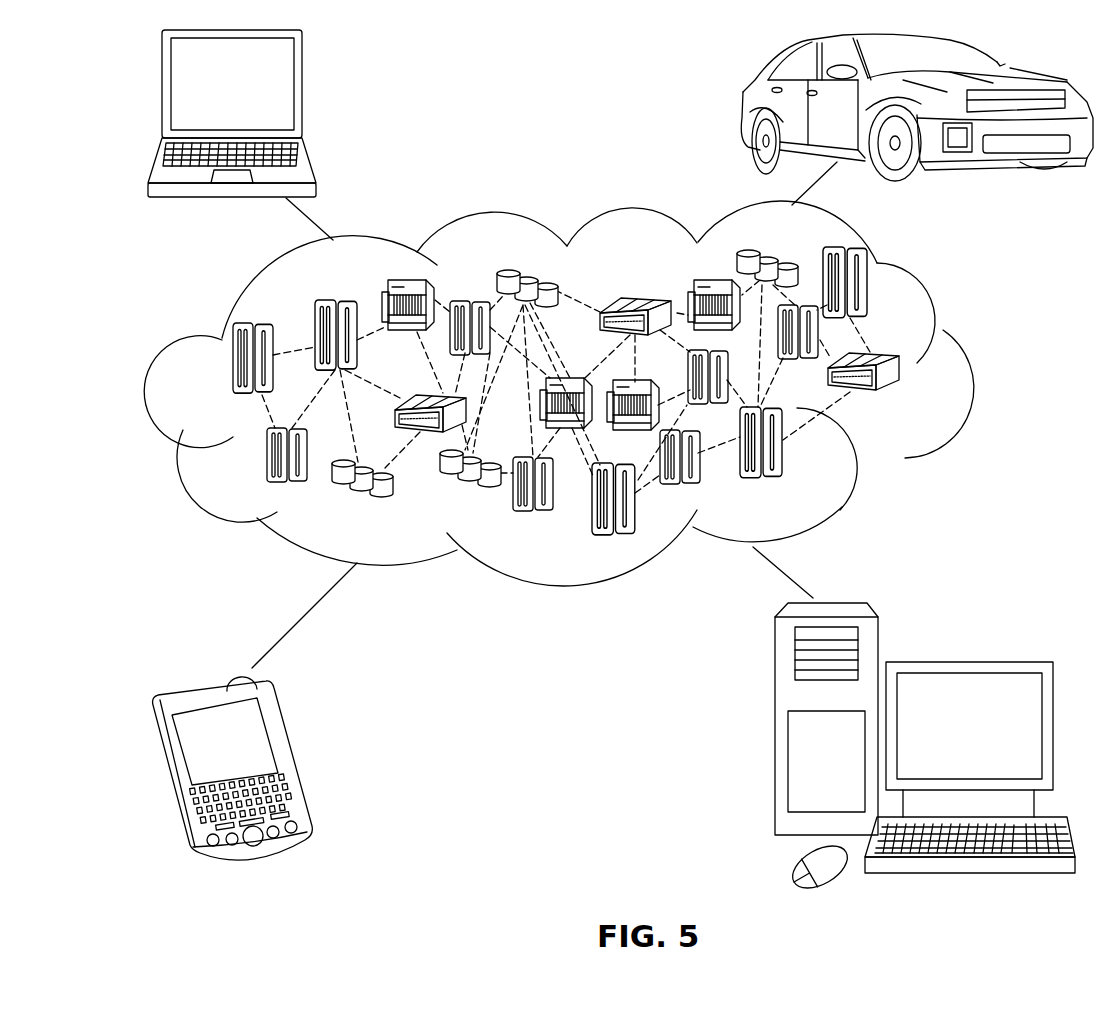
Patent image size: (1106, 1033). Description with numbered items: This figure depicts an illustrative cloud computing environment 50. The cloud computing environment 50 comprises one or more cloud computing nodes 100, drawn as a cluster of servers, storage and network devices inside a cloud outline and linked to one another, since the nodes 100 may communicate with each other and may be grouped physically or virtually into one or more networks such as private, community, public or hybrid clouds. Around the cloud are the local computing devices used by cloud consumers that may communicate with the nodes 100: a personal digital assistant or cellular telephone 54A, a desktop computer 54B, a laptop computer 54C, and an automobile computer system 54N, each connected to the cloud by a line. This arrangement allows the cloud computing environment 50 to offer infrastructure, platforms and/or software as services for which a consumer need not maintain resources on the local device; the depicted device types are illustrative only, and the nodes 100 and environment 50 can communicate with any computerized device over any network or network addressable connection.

The laptop computer 54C is at (302, 93).
The automobile computer system 54N is at (743, 108).
The personal digital assistant or cellular telephone 54A is at (288, 755).
The desktop computer 54B is at (965, 660).
The cloud computing environment 50 is at (965, 370).
The cloud computing nodes 100 is at (914, 399).